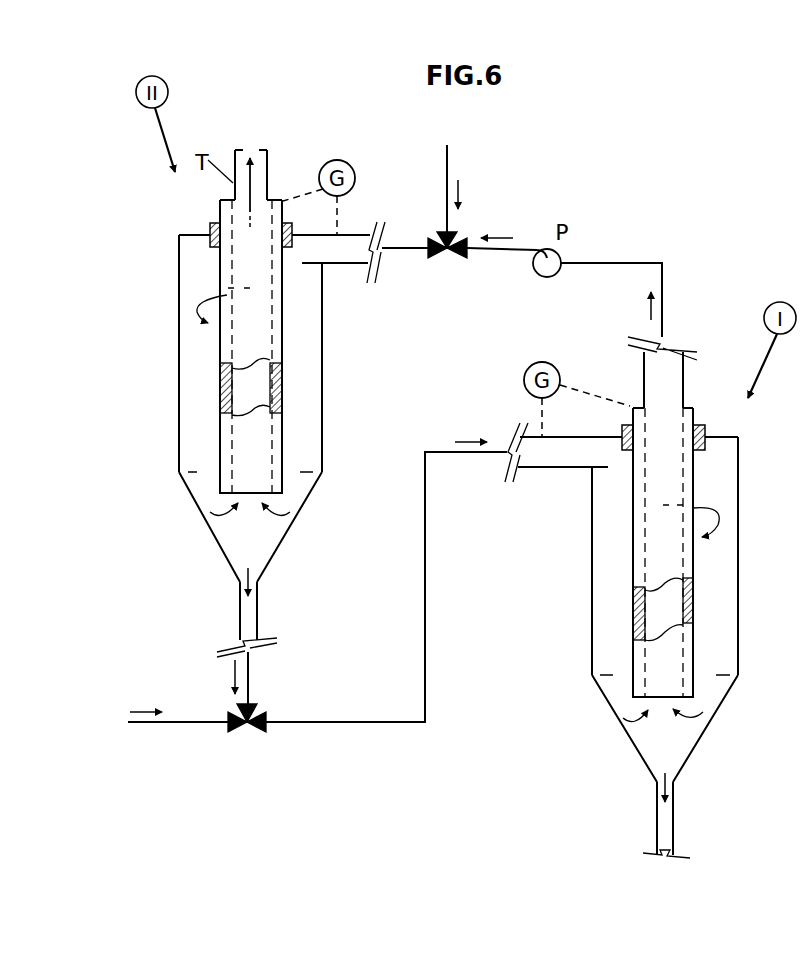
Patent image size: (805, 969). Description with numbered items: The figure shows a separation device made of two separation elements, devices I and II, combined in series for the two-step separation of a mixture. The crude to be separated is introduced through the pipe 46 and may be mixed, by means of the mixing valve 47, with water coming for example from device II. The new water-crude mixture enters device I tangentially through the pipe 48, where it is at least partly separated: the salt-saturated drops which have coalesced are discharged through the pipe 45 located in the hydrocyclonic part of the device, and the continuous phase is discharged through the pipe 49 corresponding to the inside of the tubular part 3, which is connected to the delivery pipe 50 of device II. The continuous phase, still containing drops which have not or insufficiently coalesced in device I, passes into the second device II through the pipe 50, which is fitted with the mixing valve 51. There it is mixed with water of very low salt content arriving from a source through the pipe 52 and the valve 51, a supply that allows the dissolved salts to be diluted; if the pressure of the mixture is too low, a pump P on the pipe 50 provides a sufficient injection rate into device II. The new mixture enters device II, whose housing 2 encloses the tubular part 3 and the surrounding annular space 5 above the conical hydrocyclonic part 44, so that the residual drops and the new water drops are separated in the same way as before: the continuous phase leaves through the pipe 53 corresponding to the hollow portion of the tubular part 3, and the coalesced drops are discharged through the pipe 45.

The vessel housing 2 is at (179, 274).
The tubular part 3 is at (227, 437).
The annular space 5 is at (187, 328).
The hydrocyclonic part 44 is at (190, 500).
The pipe 45 is at (240, 617).
The pipe 46 is at (182, 732).
The mixing valve 47 is at (253, 728).
The pipe 48 is at (348, 732).
The pipe 49 is at (663, 327).
The delivery pipe 50 is at (343, 270).
The mixing valve 51 is at (452, 257).
The pipe 52 is at (448, 165).
The pipe 53 is at (240, 393).